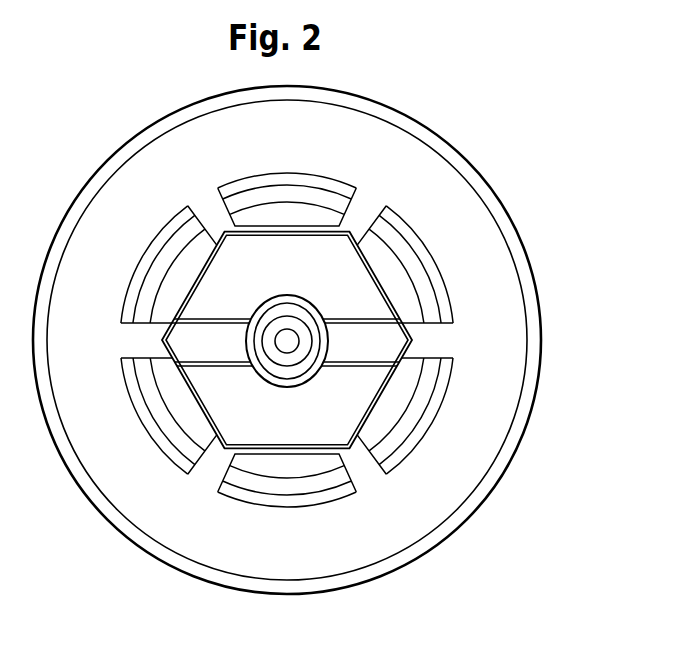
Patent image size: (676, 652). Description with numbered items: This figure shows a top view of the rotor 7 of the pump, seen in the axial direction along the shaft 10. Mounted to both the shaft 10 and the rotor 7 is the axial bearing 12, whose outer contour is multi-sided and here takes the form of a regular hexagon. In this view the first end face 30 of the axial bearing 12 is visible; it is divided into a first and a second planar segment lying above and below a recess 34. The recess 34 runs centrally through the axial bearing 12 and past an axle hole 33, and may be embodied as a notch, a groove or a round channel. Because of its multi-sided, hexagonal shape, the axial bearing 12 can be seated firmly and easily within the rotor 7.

The rotor 7 is at (482, 227).
The shaft 10 is at (292, 340).
The axial bearing 12 is at (392, 414).
The first end face 30 is at (217, 410).
The axle hole 33 is at (274, 312).
The recess 34 is at (186, 341).